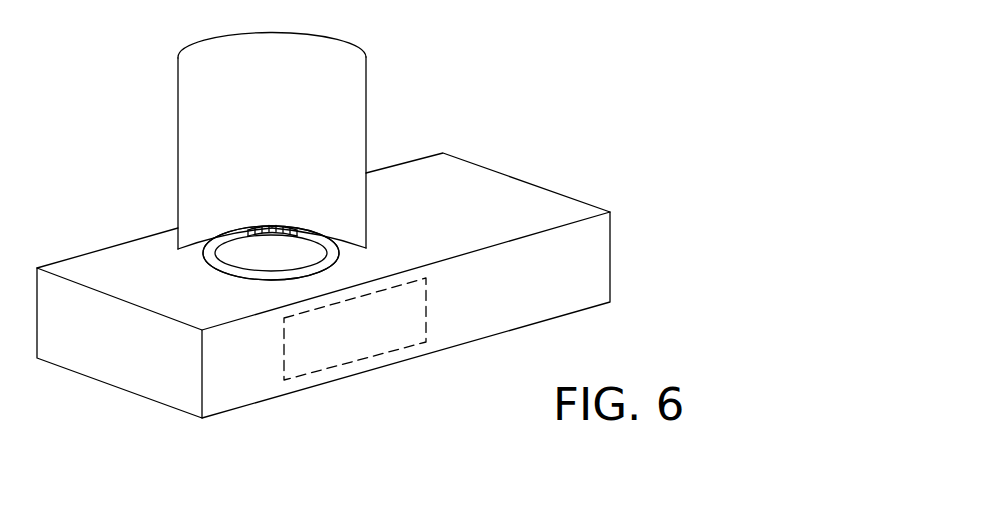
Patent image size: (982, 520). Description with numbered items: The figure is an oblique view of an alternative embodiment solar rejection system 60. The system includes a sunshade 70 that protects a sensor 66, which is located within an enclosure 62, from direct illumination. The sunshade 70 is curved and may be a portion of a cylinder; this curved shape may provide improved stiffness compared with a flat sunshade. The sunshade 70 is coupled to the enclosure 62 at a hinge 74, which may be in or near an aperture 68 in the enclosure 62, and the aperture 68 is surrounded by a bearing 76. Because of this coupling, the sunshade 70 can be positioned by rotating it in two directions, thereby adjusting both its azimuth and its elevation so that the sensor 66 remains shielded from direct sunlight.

The solar rejection system 60 is at (138, 97).
The enclosure 62 is at (443, 170).
The sensor 66 is at (347, 365).
The aperture 68 is at (265, 257).
The sunshade 70 is at (346, 75).
The hinge 74 is at (277, 228).
The bearing 76 is at (223, 270).